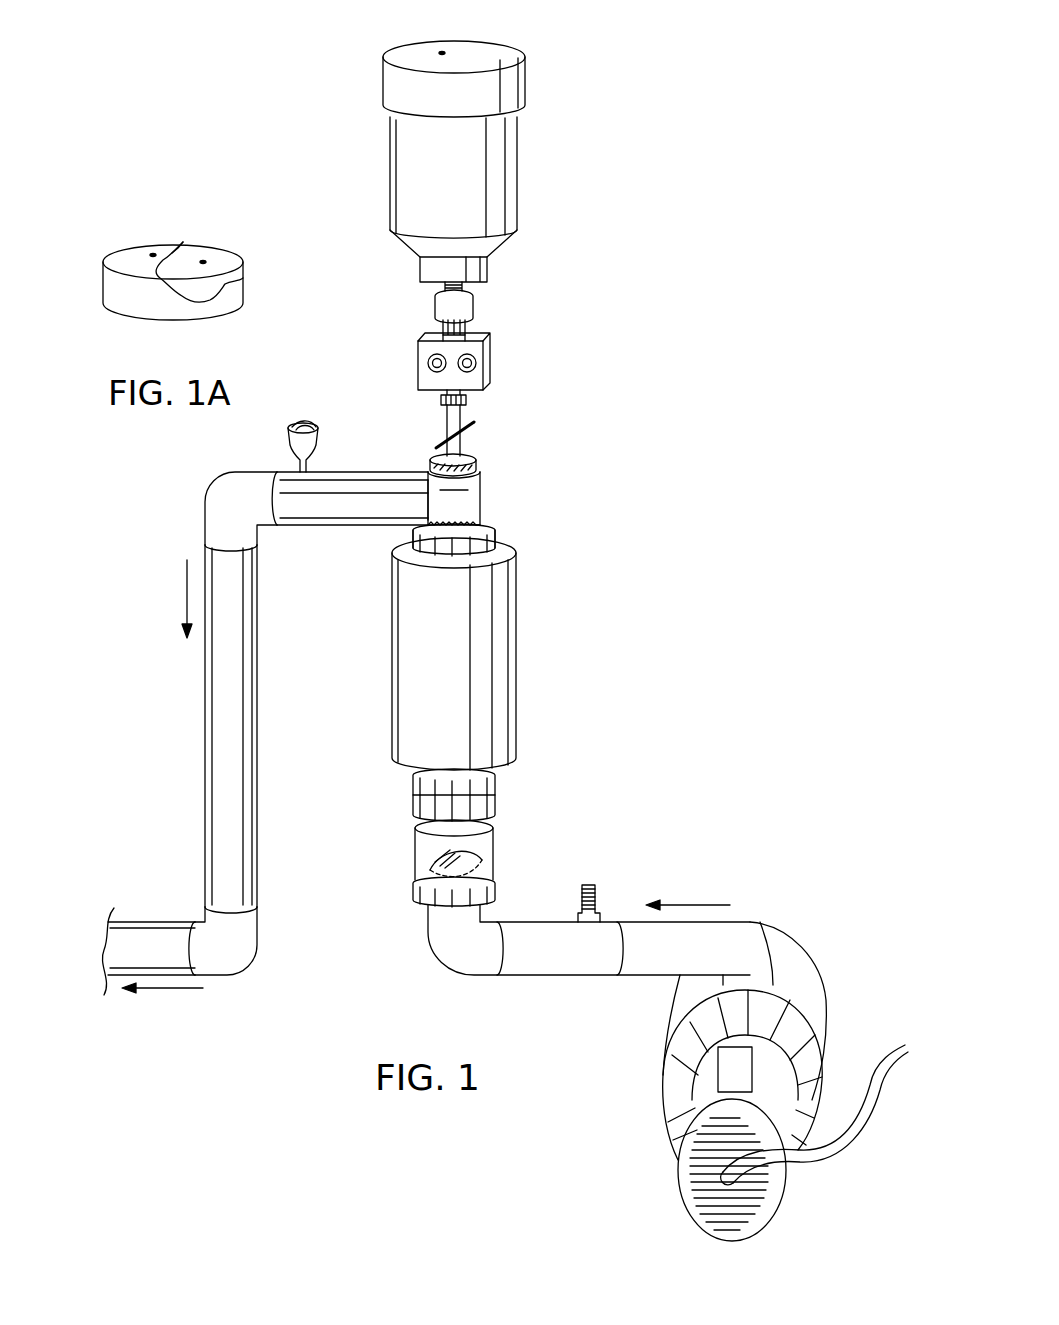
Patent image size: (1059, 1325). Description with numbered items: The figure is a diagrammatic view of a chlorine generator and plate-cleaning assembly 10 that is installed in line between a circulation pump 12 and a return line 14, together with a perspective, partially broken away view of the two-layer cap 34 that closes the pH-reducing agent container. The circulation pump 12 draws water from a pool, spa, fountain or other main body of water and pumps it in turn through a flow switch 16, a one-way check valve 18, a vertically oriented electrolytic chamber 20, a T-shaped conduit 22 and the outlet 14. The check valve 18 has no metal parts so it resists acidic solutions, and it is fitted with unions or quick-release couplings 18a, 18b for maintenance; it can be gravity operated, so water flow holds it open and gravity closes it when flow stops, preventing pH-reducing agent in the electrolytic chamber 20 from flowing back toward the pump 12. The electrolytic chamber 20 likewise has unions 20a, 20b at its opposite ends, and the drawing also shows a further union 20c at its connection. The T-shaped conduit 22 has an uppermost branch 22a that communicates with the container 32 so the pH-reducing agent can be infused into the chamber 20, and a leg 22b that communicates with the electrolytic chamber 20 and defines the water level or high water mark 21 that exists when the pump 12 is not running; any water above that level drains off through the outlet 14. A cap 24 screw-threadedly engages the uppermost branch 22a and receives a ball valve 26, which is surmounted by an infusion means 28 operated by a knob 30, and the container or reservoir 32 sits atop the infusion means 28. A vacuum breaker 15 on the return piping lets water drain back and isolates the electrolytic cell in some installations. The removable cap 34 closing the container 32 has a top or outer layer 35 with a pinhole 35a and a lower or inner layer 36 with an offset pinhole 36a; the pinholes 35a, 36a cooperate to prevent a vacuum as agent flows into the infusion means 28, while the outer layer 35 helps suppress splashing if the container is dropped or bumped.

In FIG. 1, the chlorine generator and plate-cleaning assembly 10 is at (632, 219).
In FIG. 1, the circulation pump 12 is at (665, 1032).
In FIG. 1, the return line 14 is at (137, 920).
In FIG. 1, the vacuum breaker 15 is at (290, 425).
In FIG. 1, the flow switch 16 is at (592, 950).
In FIG. 1, the one-way check valve 18 is at (418, 846).
In FIG. 1, the union 18a is at (413, 900).
In FIG. 1, the union 18b is at (414, 800).
In FIG. 1, the electrolytic chamber 20 is at (514, 648).
In FIG. 1, the union 20a is at (497, 778).
In FIG. 1, the union 20b is at (412, 531).
In FIG. 1, the outlet pipe 20c is at (416, 470).
In FIG. 1, the water level 21 is at (453, 520).
In FIG. 1, the T-shaped conduit 22 is at (483, 500).
In FIG. 1, the uppermost branch 22a is at (430, 470).
In FIG. 1, the leg 22b is at (496, 528).
In FIG. 1, the cap 24 is at (478, 460).
In FIG. 1, the ball valve 26 is at (463, 417).
In FIG. 1, the infusion means 28 is at (492, 352).
In FIG. 1, the knob 30 is at (476, 302).
In FIG. 1, the container 32 is at (392, 175).
In FIG. 1, the removable cap 34 is at (385, 80).
In FIG. 1A, the removable cap 34 is at (115, 298).
In FIG. 1, the outer layer 35 is at (505, 55).
In FIG. 1, the pinhole 35a is at (441, 48).
In FIG. 1A, the pinhole 35a is at (153, 250).
In FIG. 1A, the inner layer 36 is at (222, 263).
In FIG. 1A, the offset pinhole 36a is at (203, 258).